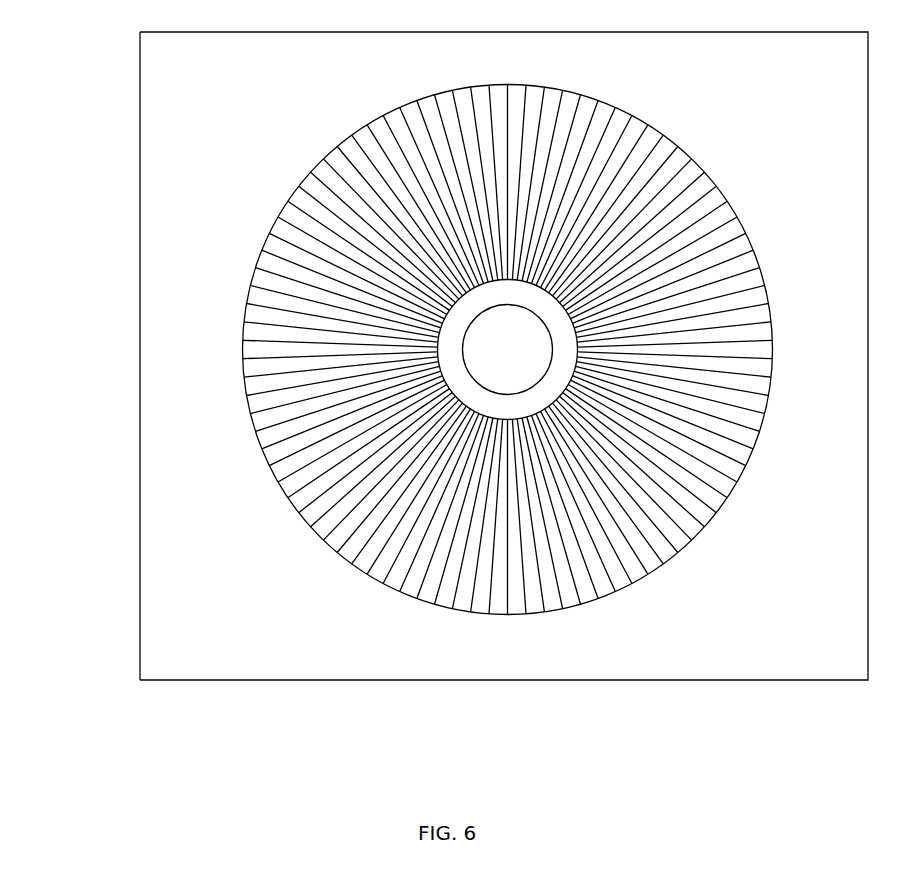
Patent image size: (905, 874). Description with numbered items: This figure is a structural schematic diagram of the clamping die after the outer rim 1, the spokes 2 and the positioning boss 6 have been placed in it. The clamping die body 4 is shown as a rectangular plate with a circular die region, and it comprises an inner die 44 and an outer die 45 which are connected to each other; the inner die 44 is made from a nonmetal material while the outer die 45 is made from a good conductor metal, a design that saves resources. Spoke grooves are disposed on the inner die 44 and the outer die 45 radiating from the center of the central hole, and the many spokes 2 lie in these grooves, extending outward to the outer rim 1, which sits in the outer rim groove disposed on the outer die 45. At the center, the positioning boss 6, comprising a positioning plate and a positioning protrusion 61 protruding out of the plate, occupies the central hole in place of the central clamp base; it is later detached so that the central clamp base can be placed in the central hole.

The outer rim 1 is at (333, 553).
The spoke 2 is at (410, 573).
The clamping die body 4 is at (180, 465).
The inner die 44 is at (543, 573).
The outer die 45 is at (185, 348).
The positioning boss 6 is at (440, 352).
The positioning protrusion 61 is at (480, 343).